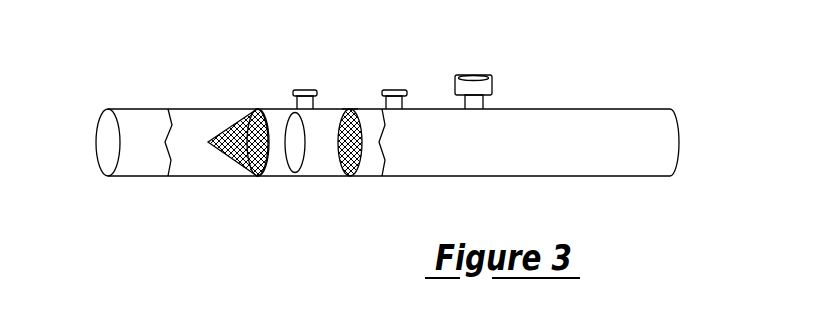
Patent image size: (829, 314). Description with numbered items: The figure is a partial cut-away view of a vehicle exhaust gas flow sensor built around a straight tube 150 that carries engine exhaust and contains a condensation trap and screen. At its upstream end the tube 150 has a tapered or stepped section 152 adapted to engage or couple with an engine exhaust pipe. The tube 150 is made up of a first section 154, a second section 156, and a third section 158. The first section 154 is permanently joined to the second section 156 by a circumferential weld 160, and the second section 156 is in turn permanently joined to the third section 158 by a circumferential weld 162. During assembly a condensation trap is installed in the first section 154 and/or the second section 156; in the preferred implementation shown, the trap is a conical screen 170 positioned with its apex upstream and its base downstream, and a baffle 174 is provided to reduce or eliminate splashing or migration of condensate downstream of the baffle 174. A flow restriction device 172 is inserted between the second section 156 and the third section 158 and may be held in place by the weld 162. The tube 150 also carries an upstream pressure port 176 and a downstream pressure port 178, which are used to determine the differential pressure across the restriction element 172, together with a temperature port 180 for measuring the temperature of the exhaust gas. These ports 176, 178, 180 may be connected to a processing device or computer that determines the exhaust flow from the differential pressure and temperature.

The straight tube 150 is at (565, 176).
The tapered or stepped section 152 is at (134, 190).
The first section 154 is at (192, 97).
The second section 156 is at (326, 98).
The third section 158 is at (575, 104).
The circumferential weld 160 is at (254, 190).
The circumferential weld 162 is at (349, 192).
The conical screen 170 is at (224, 108).
The flow restriction device 172 is at (350, 108).
The baffle 174 is at (307, 176).
The upstream pressure port 176 is at (302, 82).
The downstream pressure port 178 is at (407, 96).
The temperature port 180 is at (492, 88).